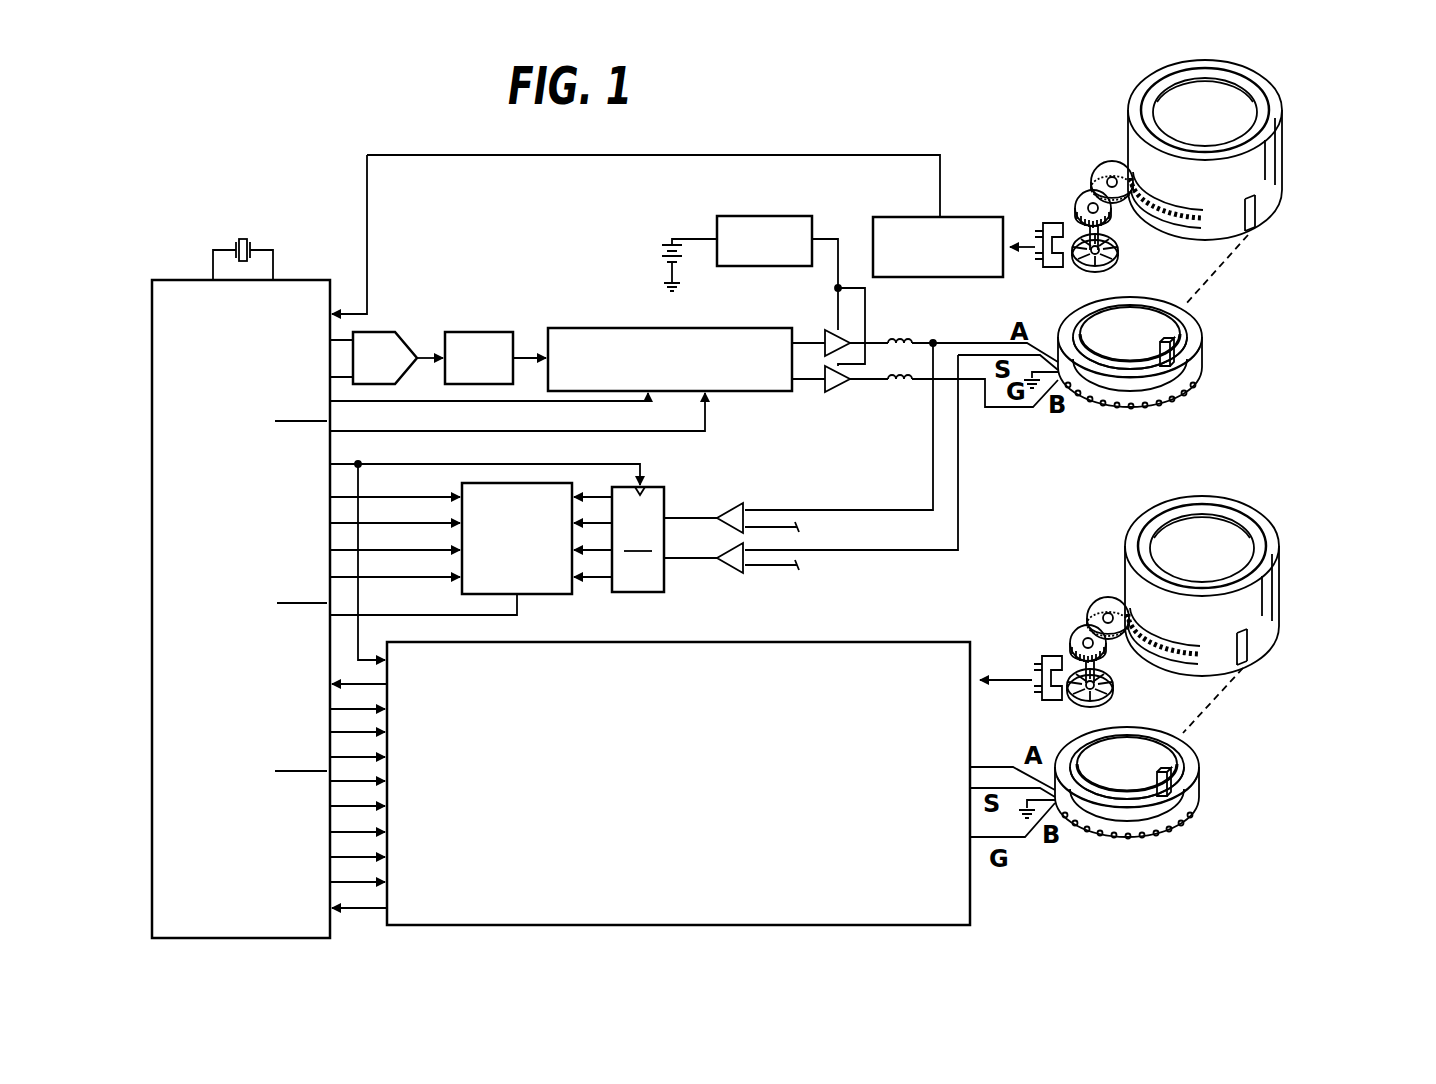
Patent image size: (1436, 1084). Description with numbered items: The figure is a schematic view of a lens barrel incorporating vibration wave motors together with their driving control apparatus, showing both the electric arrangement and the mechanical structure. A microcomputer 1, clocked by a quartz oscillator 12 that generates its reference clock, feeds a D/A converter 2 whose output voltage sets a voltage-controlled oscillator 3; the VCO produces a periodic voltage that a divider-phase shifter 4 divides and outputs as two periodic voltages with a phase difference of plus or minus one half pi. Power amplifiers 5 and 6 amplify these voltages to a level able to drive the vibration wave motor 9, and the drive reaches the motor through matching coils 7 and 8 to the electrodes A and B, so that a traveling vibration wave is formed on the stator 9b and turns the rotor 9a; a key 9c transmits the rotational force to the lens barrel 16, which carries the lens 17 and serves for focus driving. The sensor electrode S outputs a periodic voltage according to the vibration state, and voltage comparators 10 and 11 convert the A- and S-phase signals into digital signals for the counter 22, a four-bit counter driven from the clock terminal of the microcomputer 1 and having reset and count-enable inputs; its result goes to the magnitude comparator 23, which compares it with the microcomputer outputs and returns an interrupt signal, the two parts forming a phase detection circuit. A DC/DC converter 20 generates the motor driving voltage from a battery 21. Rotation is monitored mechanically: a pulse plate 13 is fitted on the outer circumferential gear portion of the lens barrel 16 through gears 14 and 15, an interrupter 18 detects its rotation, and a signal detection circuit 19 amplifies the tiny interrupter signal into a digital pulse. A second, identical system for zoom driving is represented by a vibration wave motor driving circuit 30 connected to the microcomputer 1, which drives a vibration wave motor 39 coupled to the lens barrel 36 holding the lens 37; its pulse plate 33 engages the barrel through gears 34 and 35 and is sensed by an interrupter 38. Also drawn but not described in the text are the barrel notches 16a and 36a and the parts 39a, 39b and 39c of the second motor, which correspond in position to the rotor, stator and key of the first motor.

The microcomputer 1 is at (152, 340).
The D/A converter 2 is at (400, 330).
The voltage-controlled oscillator 3 is at (494, 330).
The divider-phase shifter 4 is at (578, 328).
The power amplifier 5 is at (821, 332).
The power amplifier 6 is at (834, 386).
The matching coil 7 is at (908, 338).
The matching coil 8 is at (900, 387).
The vibration wave motor 9 is at (1170, 308).
The rotor 9a is at (1198, 328).
The stator 9b is at (1194, 382).
The key 9c is at (1160, 351).
The voltage comparator 10 is at (730, 504).
The voltage comparator 11 is at (728, 575).
The quartz oscillator 12 is at (240, 240).
The pulse plate 13 is at (1095, 272).
The gear 14 is at (1112, 222).
The gear 15 is at (1104, 164).
The lens barrel 16 is at (1282, 170).
The notch 16a is at (1252, 232).
The lens 17 is at (1240, 113).
The interrupter 18 is at (1045, 221).
The signal detection circuit 19 is at (898, 216).
The DC/DC converter 20 is at (772, 216).
The battery 21 is at (662, 248).
The counter 22 is at (652, 594).
The magnitude comparator 23 is at (536, 594).
The vibration wave motor driving circuit 30 is at (868, 642).
The pulse plate 33 is at (1115, 685).
The gear 34 is at (1070, 634).
The gear 35 is at (1094, 599).
The lens barrel 36 is at (1278, 571).
The notch 36a is at (1258, 658).
The lens 37 is at (1236, 523).
The interrupter 38 is at (1042, 660).
The vibration wave motor 39 is at (1156, 740).
The rotor 39a is at (1196, 765).
The stator contacts 39b is at (1192, 827).
The projection 39c is at (1157, 786).